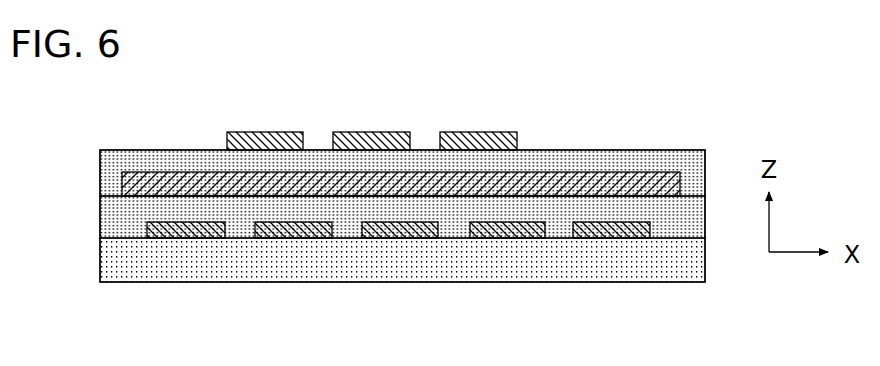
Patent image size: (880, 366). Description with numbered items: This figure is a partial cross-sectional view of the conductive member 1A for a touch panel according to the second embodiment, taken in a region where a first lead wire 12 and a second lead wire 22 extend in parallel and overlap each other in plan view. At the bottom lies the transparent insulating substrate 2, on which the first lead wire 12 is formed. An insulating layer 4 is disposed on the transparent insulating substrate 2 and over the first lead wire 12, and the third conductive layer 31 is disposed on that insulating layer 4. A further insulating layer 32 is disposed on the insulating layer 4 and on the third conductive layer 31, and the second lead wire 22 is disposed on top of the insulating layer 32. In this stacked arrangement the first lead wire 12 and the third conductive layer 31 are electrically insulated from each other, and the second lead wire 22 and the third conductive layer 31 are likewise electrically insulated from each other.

The conductive member for a touch panel 1A is at (727, 105).
The transparent insulating substrate 2 is at (123, 257).
The insulating layer 4 is at (452, 228).
The first lead wire 12 is at (298, 238).
The second lead wire 22 is at (263, 132).
The third conductive layer 31 is at (598, 182).
The insulating layer 32 is at (692, 175).